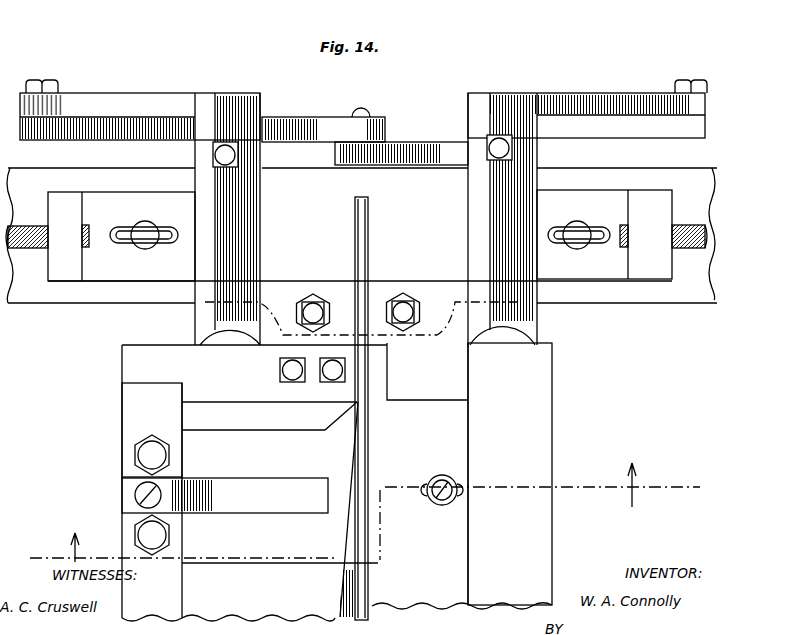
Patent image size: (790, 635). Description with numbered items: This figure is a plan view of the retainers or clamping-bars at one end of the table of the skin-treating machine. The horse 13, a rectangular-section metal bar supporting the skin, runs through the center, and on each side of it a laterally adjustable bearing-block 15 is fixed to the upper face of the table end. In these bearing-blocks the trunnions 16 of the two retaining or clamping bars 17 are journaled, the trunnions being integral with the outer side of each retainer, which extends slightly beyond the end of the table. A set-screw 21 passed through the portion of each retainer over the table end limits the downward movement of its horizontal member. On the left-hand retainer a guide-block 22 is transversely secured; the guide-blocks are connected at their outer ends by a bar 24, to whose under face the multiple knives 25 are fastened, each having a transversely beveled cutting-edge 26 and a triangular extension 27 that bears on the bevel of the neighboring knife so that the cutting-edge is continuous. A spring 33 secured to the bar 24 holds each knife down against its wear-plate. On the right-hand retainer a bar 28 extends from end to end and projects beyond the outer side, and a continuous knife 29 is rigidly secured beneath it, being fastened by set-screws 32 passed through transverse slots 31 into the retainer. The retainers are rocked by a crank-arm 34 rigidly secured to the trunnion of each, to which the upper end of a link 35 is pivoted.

The horse 13 is at (379, 432).
The bearing-block 15 is at (356, 235).
The trunnion 16 is at (205, 315).
The retaining or clamping bar 17 is at (362, 318).
The set-screw 21 is at (298, 312).
The guide-block 22 is at (269, 380).
The connecting-bar 24 is at (152, 469).
The multiple knives 25 is at (269, 427).
The beveled cutting-edge 26 is at (350, 508).
The triangular extension 27 is at (357, 403).
The bar 28 is at (510, 474).
The continuous knife 29 is at (418, 502).
The transverse slot 31 is at (428, 489).
The set-screw 32 is at (443, 479).
The spring 33 is at (225, 495).
The crank-arm 34 is at (363, 110).
The link 35 is at (323, 128).